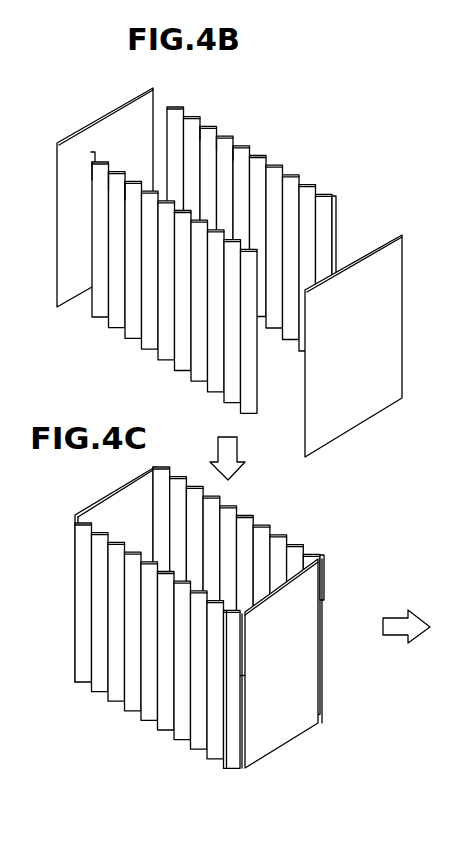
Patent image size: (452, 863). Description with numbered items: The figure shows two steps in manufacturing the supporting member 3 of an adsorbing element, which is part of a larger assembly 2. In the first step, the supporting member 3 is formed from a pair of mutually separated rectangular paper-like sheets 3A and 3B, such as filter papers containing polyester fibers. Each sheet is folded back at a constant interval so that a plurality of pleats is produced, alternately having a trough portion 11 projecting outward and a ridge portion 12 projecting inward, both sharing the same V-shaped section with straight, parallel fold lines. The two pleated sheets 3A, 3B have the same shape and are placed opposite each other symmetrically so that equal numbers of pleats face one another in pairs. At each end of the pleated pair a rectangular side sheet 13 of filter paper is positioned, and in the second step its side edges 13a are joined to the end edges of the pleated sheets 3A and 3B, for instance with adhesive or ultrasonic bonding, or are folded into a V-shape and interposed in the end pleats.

In FIG. 4B, the fuel cell stack 2 is at (447, 210).
In FIG. 4B, the supporting member 3 is at (202, 234).
In FIG. 4C, the supporting member 3 is at (263, 627).
In FIG. 4B, the paper-like sheet 3A is at (160, 357).
In FIG. 4C, the paper-like sheet 3A is at (200, 736).
In FIG. 4B, the paper-like sheet 3B is at (312, 178).
In FIG. 4C, the paper-like sheet 3B is at (276, 531).
In FIG. 4B, the trough portion 11 is at (204, 124).
In FIG. 4B, the ridge portion 12 is at (133, 181).
In FIG. 4B, the side sheet 13 is at (72, 136).
In FIG. 4C, the side sheet 13 is at (263, 645).
In FIG. 4C, the side edge 13a is at (322, 675).